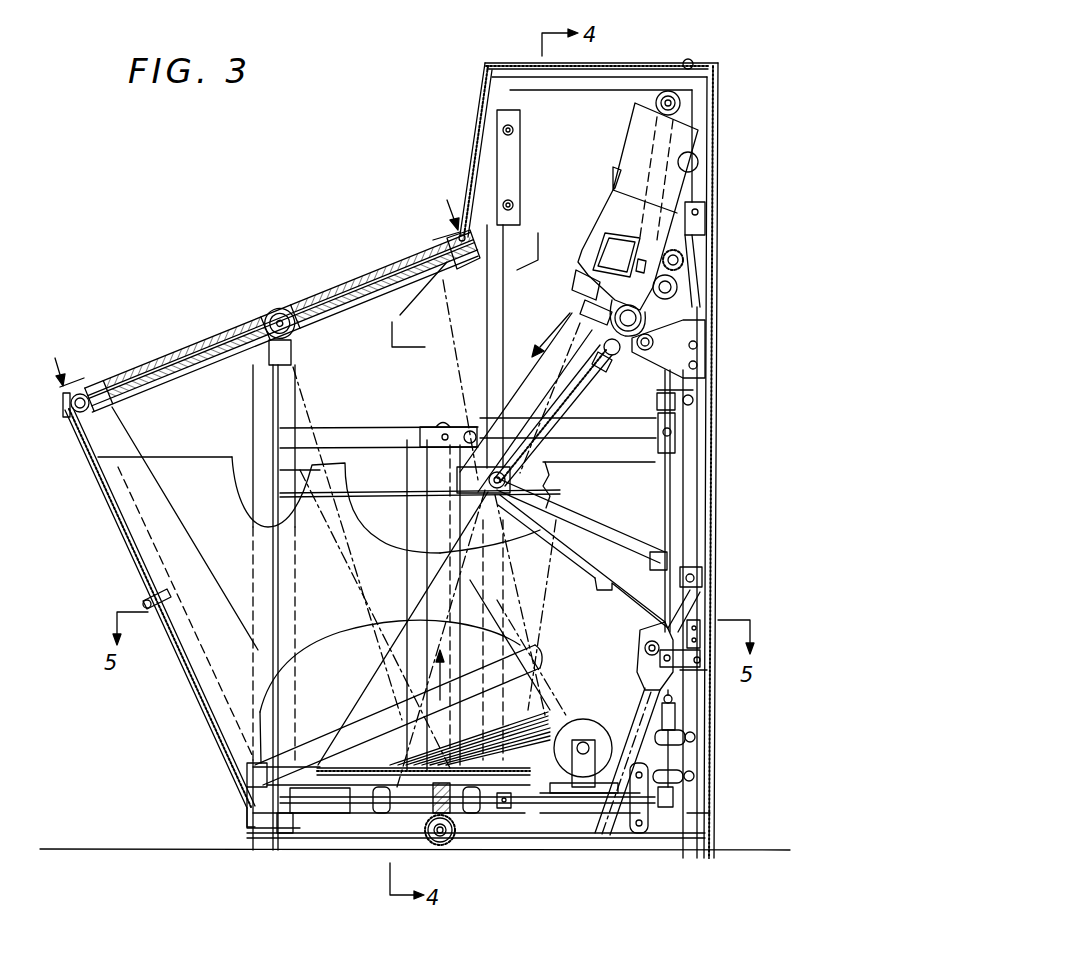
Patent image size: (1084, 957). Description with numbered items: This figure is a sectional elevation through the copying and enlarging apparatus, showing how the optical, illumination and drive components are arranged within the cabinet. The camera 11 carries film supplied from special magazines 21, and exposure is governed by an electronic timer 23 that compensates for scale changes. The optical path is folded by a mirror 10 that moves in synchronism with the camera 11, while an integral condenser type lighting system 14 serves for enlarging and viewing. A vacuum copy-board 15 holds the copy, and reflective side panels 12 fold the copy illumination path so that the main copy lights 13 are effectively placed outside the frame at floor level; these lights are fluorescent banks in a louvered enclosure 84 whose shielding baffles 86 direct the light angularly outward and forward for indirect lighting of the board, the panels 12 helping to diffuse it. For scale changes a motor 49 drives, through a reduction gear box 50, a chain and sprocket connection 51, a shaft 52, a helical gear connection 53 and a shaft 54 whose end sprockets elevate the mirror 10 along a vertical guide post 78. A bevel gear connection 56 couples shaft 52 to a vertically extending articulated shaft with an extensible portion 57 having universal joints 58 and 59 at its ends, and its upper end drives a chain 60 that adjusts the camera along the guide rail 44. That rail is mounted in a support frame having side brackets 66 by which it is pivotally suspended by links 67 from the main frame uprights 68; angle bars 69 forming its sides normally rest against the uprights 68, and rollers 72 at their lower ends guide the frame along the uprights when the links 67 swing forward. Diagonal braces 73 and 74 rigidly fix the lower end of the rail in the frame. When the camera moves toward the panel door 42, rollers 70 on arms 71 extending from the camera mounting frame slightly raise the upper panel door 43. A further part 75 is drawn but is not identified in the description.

The mirror 10 is at (350, 765).
The camera 11 is at (612, 213).
The reflective side panels 12 is at (215, 660).
The main copy lights 13 is at (249, 280).
The integral condenser type lighting system 14 is at (613, 160).
The vacuum copy-board 15 is at (365, 280).
The film magazines 21 is at (606, 245).
The electronic timer 23 is at (618, 356).
The panel door 42 is at (473, 148).
The upper panel door 43 is at (623, 67).
The guide rail 44 is at (537, 390).
The motor 49 is at (583, 725).
The reduction gear box 50 is at (598, 745).
The chain and sprocket connection 51 is at (590, 762).
The shaft 52 is at (528, 808).
The helical gear connection 53 is at (446, 845).
The shaft 54 is at (430, 835).
The bevel gear connection 56 is at (660, 810).
The extensible portion of articulated shaft 57 is at (672, 500).
The universal joint 58 is at (676, 450).
The universal joint 59 is at (675, 710).
The chain 60 is at (588, 400).
The side brackets 66 is at (677, 357).
The links 67 is at (660, 318).
The main frame uprights 68 is at (703, 147).
The angle bars 69 is at (697, 432).
The rollers 70 is at (656, 104).
The arms 71 is at (650, 135).
The rollers 72 is at (700, 655).
The diagonal brace 73 is at (572, 520).
The diagonal brace 74 is at (603, 575).
The base corner 75 is at (247, 790).
The vertical guide post 78 is at (410, 513).
The louvered enclosure 84 is at (535, 695).
The shielding baffles 86 is at (530, 655).